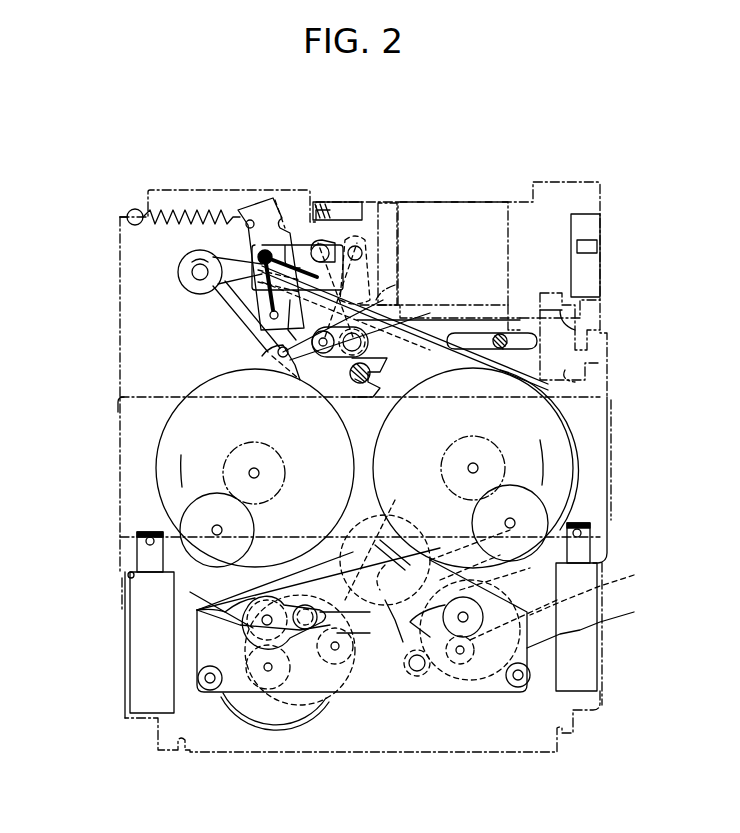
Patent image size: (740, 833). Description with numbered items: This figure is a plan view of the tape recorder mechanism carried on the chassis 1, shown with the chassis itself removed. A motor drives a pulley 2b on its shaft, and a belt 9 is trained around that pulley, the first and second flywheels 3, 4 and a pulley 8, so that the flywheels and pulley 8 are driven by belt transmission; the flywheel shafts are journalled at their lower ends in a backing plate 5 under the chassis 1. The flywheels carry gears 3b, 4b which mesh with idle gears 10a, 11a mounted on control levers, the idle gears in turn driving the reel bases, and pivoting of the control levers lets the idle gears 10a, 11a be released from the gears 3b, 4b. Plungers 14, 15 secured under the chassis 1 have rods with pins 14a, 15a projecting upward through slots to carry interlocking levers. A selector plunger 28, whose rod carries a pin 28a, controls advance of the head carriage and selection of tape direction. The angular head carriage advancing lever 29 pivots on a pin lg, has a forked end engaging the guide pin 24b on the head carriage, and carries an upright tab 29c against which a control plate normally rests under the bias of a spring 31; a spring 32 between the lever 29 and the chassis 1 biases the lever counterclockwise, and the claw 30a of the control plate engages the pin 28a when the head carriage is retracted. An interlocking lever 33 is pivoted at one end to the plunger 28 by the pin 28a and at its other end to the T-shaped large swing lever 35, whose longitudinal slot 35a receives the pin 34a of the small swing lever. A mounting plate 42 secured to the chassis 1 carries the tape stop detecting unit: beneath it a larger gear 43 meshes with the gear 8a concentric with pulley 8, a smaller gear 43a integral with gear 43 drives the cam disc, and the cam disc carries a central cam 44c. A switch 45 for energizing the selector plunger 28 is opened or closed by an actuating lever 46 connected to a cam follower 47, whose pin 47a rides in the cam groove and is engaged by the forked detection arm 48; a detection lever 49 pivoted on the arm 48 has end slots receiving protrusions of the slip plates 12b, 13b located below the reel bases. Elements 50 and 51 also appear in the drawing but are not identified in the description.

The chassis 1 is at (556, 200).
The pulley 2b is at (198, 272).
The first flywheel 3 is at (523, 468).
The gear of first flywheel 3b is at (480, 438).
The second flywheel 4 is at (211, 468).
The gear of second flywheel 4b is at (235, 452).
The backing plate 5 is at (590, 406).
The pulley 8 is at (248, 705).
The gear 8a is at (268, 690).
The belt 9 is at (570, 466).
The idle gear 10a is at (540, 503).
The idle gear 11a is at (185, 525).
The slip plate 12b is at (508, 560).
The slip plate 13b is at (251, 600).
The plunger 14 is at (585, 648).
The pin 14a is at (580, 534).
The plunger 15 is at (140, 632).
The pin 15a is at (150, 541).
The guide pin 24b is at (385, 372).
The selector plunger 28 is at (430, 210).
The pin 28a is at (360, 215).
The head carriage advancing lever 29 is at (258, 208).
The upright tab 29c is at (300, 325).
The claw 30a is at (325, 202).
The spring 31 is at (300, 245).
The spring 32 is at (193, 215).
The interlocking lever 33 is at (377, 290).
The pin 34a is at (550, 290).
The large swing lever 35 is at (560, 330).
The longitudinal slot 35a is at (300, 378).
The mounting plate 42 is at (594, 625).
The larger gear 43 is at (325, 655).
The smaller gear 43a is at (360, 660).
The cam 44c is at (388, 550).
The switch 45 is at (565, 603).
The actuating lever 46 is at (482, 683).
The cam follower 47 is at (458, 665).
The pin 47a is at (380, 575).
The detection arm 48 is at (385, 542).
The detection lever 49 is at (315, 568).
The switch 50 is at (592, 222).
The bracket 51 is at (385, 215).
The pin lg is at (276, 352).